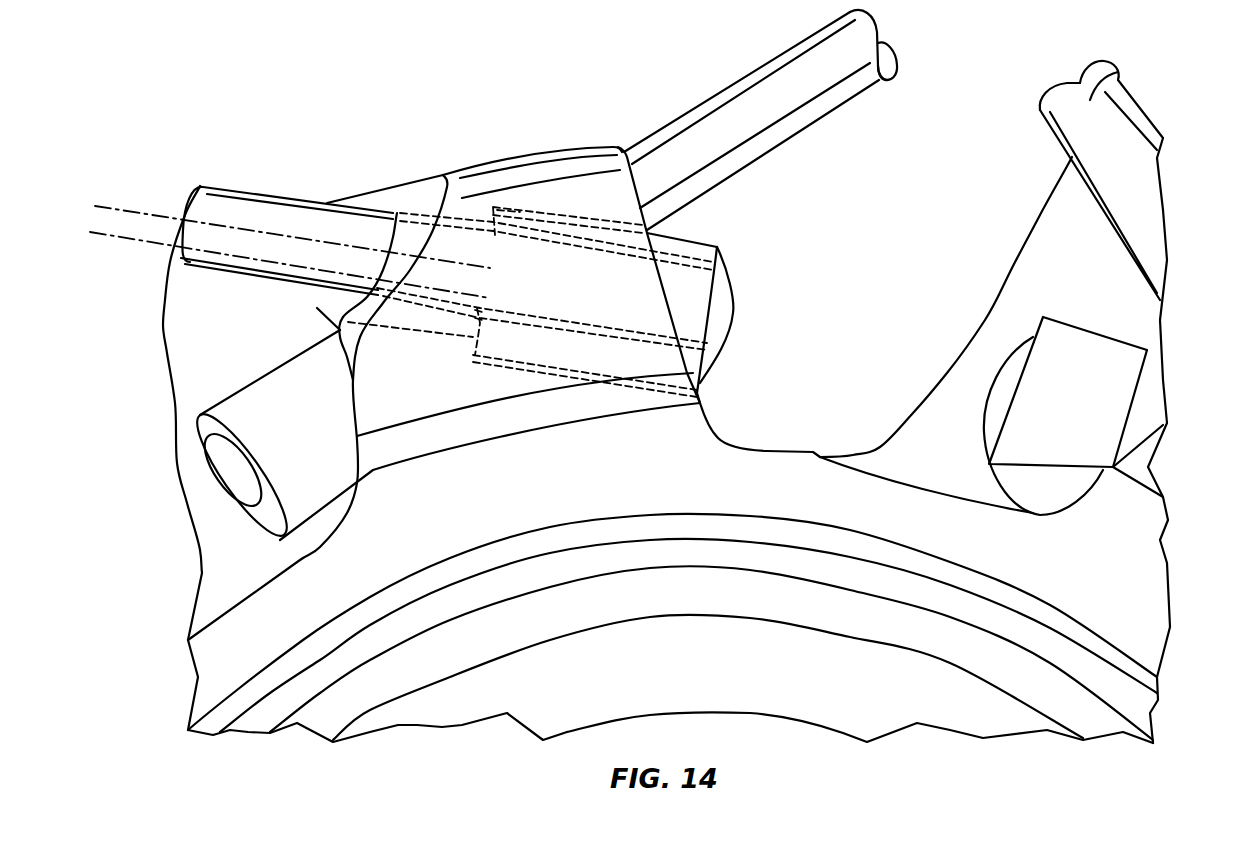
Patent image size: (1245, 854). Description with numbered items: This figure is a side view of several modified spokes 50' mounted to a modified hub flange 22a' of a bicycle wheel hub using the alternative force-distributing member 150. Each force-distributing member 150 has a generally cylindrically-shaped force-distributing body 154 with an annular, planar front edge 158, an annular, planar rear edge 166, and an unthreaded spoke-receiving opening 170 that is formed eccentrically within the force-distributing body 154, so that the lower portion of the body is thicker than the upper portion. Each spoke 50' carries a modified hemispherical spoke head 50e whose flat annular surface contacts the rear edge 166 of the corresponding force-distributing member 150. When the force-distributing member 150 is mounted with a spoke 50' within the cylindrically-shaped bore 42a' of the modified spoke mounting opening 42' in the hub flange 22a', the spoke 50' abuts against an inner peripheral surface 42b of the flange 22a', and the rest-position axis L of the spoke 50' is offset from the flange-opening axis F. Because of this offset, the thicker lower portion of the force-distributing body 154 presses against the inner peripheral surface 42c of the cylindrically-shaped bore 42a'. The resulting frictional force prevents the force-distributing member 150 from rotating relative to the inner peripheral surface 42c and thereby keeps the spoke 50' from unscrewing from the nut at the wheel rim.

The modified spoke 50' is at (695, 155).
The modified hub flange 22a' is at (504, 350).
The modified spoke mounting opening 42' is at (352, 259).
The cylindrically-shaped bore 42a' is at (530, 149).
The inner peripheral surface 42b is at (415, 213).
The inner peripheral surface 42c is at (527, 371).
The force-distributing member 150 is at (208, 372).
The force-distributing body 154 is at (278, 366).
The spoke head 50e is at (213, 490).
The rear edge 166 is at (265, 520).
The front edge 158 is at (477, 318).
The spoke-receiving opening 170 is at (475, 310).
The rest-position axis L is at (110, 203).
The flange-opening axis F is at (115, 240).